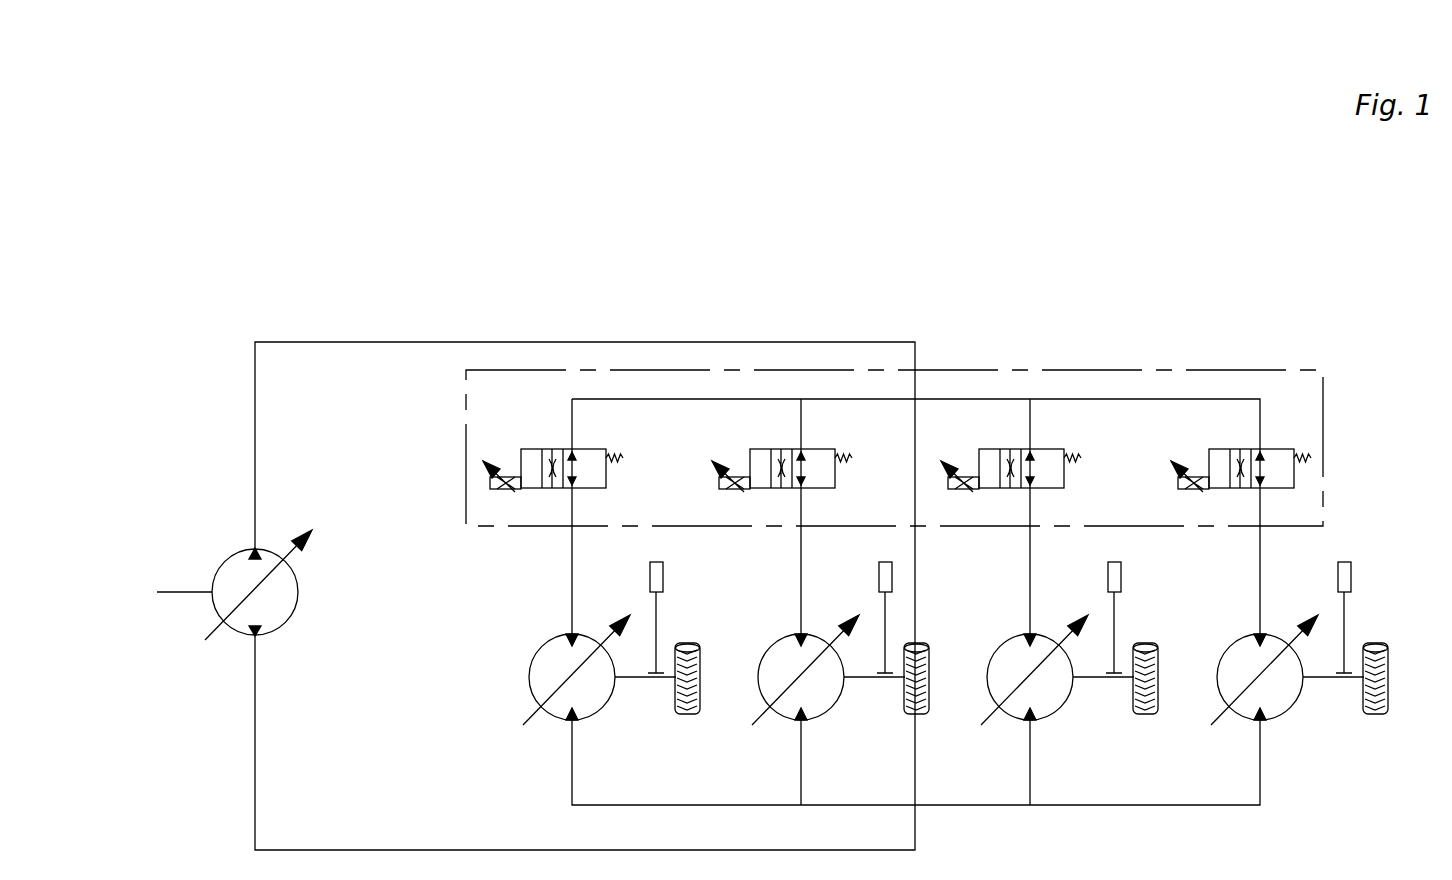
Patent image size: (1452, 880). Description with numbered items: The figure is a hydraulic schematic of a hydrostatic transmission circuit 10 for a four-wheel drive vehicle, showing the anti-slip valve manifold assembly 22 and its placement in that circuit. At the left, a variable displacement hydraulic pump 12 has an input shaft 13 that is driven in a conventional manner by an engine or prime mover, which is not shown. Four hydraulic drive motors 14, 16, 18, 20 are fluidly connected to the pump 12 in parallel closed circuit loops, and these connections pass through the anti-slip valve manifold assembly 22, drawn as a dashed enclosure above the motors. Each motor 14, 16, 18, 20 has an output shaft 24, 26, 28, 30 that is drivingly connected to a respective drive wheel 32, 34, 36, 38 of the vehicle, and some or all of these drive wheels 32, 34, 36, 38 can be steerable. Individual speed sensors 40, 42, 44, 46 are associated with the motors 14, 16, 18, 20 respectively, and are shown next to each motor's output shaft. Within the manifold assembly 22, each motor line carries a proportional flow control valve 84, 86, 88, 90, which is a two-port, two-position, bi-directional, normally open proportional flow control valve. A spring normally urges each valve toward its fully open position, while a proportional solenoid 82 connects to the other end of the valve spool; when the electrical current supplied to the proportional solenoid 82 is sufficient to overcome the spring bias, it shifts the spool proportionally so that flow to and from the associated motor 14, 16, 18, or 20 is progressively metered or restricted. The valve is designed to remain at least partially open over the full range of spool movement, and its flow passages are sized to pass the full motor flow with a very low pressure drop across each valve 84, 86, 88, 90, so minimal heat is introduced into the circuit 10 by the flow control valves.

The circuit 10 is at (835, 318).
The variable displacement hydraulic pump 12 is at (273, 630).
The input shaft 13 is at (172, 592).
The hydraulic drive motor 14 is at (560, 720).
The hydraulic drive motor 16 is at (789, 720).
The hydraulic drive motor 18 is at (1018, 720).
The hydraulic drive motor 20 is at (1248, 720).
The anti-slip valve manifold assembly 22 is at (1018, 368).
The output shaft 24 is at (643, 678).
The output shaft 26 is at (872, 678).
The output shaft 28 is at (1101, 678).
The output shaft 30 is at (1331, 678).
The drive wheel 32 is at (688, 645).
The drive wheel 34 is at (917, 645).
The drive wheel 36 is at (1146, 645).
The drive wheel 38 is at (1376, 645).
The speed sensor 40 is at (663, 577).
The speed sensor 42 is at (892, 577).
The speed sensor 44 is at (1121, 577).
The speed sensor 46 is at (1351, 577).
The proportional solenoid 82 is at (496, 490).
The proportional flow control valve 84 is at (524, 449).
The proportional flow control valve 86 is at (753, 449).
The proportional flow control valve 88 is at (982, 449).
The proportional flow control valve 90 is at (1212, 449).